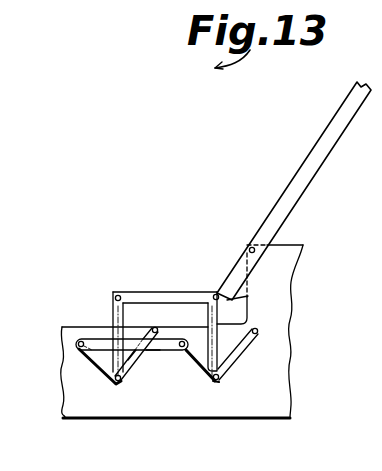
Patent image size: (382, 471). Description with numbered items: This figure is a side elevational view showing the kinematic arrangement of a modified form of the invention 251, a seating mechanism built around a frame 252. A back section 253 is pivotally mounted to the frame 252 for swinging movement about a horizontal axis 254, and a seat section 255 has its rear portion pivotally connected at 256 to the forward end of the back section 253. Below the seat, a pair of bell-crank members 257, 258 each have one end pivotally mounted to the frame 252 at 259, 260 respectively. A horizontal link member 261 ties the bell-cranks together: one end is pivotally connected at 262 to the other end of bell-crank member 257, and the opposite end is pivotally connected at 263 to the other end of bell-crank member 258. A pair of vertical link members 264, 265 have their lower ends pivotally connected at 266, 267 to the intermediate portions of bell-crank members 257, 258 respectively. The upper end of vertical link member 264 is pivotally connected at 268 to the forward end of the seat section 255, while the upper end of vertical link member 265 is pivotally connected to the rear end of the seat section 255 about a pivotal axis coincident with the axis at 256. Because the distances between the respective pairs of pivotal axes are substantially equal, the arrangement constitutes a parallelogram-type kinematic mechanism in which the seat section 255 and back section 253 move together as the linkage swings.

The modified form of the invention 251 is at (176, 224).
The frame 252 is at (289, 269).
The back section 253 is at (297, 171).
The horizontal axis 254 is at (247, 246).
The seat section 255 is at (155, 292).
The pivotal connection 256 is at (213, 293).
The bell-crank member 257 is at (136, 352).
The bell-crank member 258 is at (250, 343).
The pivotal mounting 259 is at (158, 328).
The pivotal mounting 260 is at (257, 326).
The horizontal link member 261 is at (153, 351).
The pivotal connection 262 is at (78, 343).
The pivotal connection 263 is at (187, 352).
The vertical link member 264 is at (113, 310).
The vertical link member 265 is at (228, 308).
The pivotal connection 266 is at (114, 385).
The pivotal connection 267 is at (221, 383).
The pivotal connection 268 is at (118, 295).